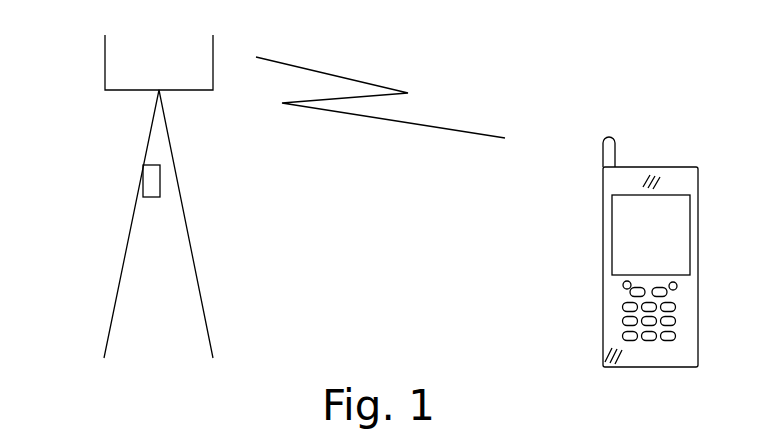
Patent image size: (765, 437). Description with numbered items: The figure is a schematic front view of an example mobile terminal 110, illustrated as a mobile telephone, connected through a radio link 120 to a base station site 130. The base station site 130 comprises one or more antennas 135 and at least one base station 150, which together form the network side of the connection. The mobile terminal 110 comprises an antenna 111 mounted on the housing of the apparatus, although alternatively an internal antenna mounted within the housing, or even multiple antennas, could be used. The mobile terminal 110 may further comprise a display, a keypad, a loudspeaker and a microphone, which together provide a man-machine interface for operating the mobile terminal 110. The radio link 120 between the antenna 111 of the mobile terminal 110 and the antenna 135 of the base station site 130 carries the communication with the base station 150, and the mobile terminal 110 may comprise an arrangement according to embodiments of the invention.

The mobile terminal 110 is at (678, 132).
The antenna 111 is at (604, 142).
The radio link 120 is at (402, 122).
The base station site 130 is at (124, 259).
The antenna 135 is at (106, 68).
The base station 150 is at (147, 175).